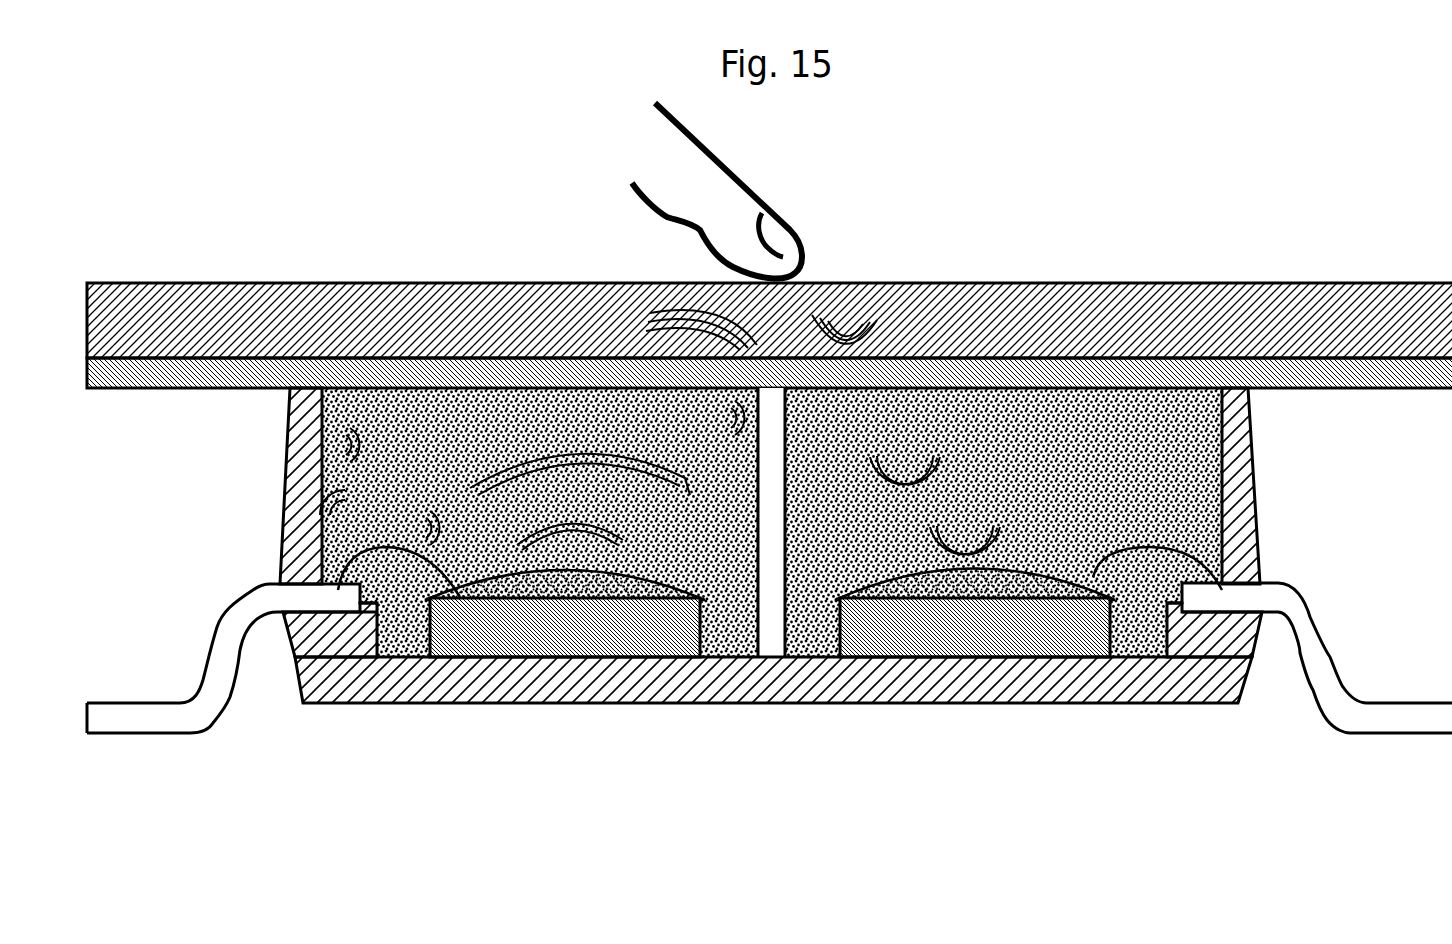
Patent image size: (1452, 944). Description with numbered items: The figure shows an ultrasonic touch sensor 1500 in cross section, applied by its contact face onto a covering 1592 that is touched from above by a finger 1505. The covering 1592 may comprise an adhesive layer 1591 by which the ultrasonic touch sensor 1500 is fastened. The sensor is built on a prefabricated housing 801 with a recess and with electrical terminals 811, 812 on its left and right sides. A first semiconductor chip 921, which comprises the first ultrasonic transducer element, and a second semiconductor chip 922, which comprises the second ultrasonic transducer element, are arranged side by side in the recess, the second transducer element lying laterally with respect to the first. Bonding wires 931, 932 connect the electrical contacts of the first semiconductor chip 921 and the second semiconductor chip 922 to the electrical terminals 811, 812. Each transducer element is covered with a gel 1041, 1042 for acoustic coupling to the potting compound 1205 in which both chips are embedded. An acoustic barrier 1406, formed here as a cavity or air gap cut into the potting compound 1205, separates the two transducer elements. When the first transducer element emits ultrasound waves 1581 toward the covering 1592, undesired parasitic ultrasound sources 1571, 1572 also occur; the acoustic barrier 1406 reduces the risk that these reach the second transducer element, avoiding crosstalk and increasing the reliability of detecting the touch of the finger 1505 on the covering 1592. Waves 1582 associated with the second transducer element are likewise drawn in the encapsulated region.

The ultrasonic touch sensor 1500 is at (203, 516).
The finger 1505 is at (667, 178).
The covering 1592 is at (1330, 317).
The adhesive layer 1591 is at (805, 375).
The parasitic ultrasound source 1571 is at (343, 497).
The parasitic ultrasound source 1572 is at (771, 657).
The ultrasound waves 1581 is at (620, 705).
The right sensor dome 1582 is at (967, 540).
The potting compound 1205 is at (710, 657).
The acoustic barrier 1406 is at (787, 683).
The gel 1041 is at (597, 590).
The gel 1042 is at (1037, 590).
The prefabricated housing 801 is at (733, 400).
The electrical terminal 811 is at (106, 720).
The electrical terminal 812 is at (1412, 720).
The bonding wire 931 is at (413, 553).
The bonding wire 932 is at (1133, 543).
The first semiconductor chip 921 is at (465, 633).
The second semiconductor chip 922 is at (1113, 703).